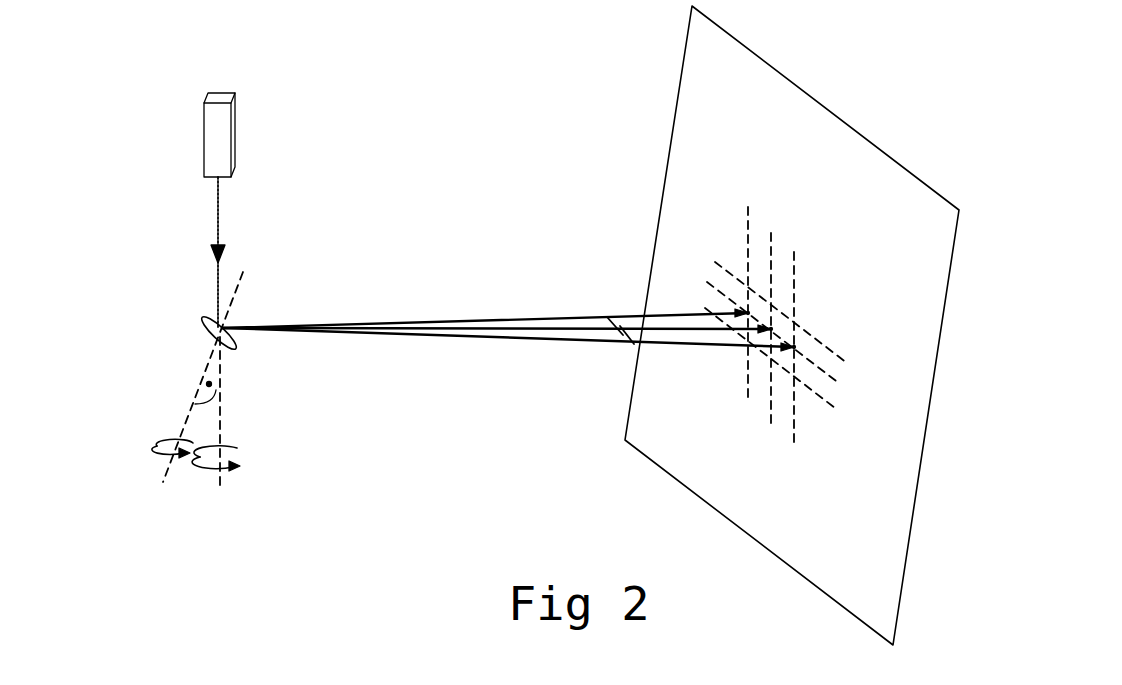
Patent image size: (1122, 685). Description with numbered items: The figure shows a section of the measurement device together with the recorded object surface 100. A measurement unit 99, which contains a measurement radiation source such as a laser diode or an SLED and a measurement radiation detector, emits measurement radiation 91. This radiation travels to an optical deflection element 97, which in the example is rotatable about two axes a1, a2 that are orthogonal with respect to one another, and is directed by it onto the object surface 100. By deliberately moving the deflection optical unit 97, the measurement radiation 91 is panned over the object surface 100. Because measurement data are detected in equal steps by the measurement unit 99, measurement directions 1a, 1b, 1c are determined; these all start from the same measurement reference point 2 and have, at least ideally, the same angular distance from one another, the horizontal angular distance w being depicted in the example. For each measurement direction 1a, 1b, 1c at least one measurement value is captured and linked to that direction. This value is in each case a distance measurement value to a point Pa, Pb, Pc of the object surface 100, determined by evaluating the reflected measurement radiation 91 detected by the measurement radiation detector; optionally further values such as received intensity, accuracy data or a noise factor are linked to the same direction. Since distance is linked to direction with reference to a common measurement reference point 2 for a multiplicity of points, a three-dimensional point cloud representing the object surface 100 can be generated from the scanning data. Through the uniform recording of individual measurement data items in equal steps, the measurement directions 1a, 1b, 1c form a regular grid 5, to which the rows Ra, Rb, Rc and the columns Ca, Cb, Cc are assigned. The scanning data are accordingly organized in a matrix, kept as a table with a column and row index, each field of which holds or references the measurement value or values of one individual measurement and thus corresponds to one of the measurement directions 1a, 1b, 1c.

The object surface 100 is at (792, 325).
The measurement unit 99 is at (264, 132).
The measurement radiation 91 is at (267, 241).
The measurement reference point 2 is at (177, 324).
The optical deflection element 97 is at (256, 374).
The first axis a1 is at (252, 412).
The second axis a2 is at (175, 377).
The measurement direction 1a is at (485, 289).
The measurement direction 1b is at (496, 351).
The measurement direction 1c is at (508, 373).
The horizontal angular distance w is at (588, 287).
The column Ca is at (802, 281).
The column Cb is at (833, 307).
The column Cc is at (861, 335).
The row Ra is at (854, 312).
The row Rb is at (851, 336).
The row Rc is at (849, 371).
The point Pa is at (706, 272).
The point Pb is at (721, 400).
The point Pc is at (827, 419).
The regular grid 5 is at (881, 304).